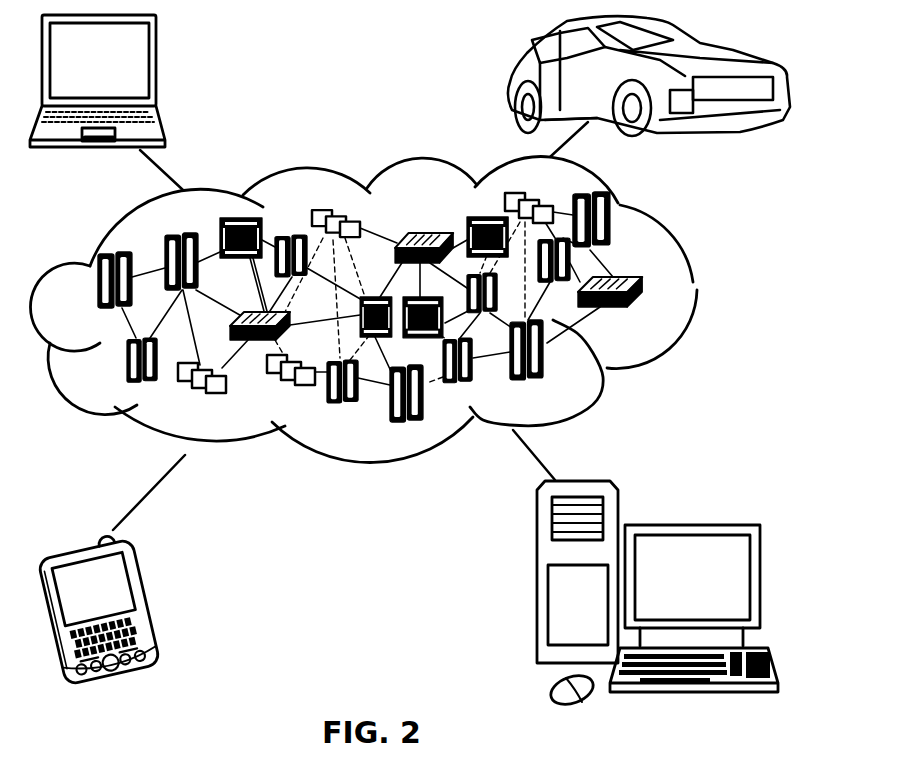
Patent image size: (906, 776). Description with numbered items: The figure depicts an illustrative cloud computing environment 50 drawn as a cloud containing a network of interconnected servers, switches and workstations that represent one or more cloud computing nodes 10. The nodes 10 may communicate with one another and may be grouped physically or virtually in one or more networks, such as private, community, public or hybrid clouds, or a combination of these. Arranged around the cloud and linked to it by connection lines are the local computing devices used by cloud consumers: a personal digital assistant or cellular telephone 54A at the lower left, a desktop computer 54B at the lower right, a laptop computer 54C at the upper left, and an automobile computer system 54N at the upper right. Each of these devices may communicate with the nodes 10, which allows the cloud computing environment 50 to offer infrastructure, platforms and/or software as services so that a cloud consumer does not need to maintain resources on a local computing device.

The cloud computing nodes 10 is at (650, 315).
The cloud computing environment 50 is at (695, 286).
The personal digital assistant or cellular telephone 54A is at (148, 604).
The desktop computer 54B is at (690, 524).
The laptop computer 54C is at (156, 64).
The automobile computer system 54N is at (512, 80).